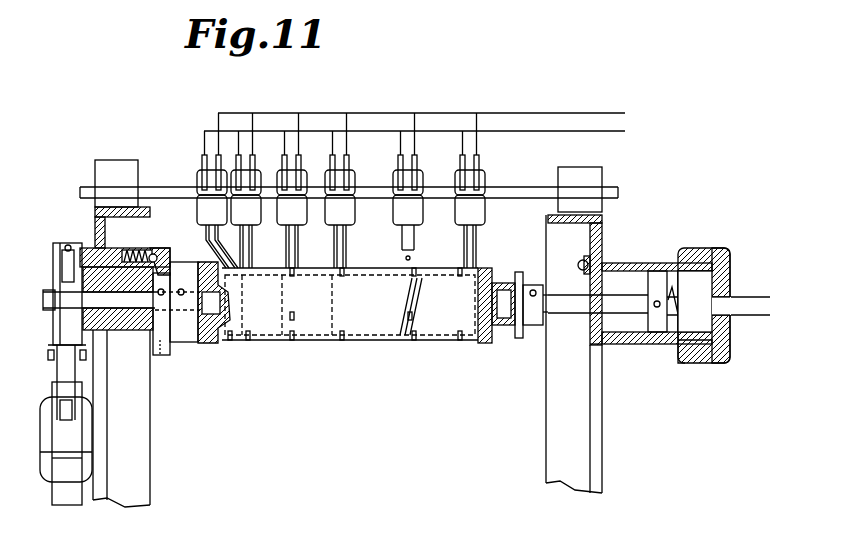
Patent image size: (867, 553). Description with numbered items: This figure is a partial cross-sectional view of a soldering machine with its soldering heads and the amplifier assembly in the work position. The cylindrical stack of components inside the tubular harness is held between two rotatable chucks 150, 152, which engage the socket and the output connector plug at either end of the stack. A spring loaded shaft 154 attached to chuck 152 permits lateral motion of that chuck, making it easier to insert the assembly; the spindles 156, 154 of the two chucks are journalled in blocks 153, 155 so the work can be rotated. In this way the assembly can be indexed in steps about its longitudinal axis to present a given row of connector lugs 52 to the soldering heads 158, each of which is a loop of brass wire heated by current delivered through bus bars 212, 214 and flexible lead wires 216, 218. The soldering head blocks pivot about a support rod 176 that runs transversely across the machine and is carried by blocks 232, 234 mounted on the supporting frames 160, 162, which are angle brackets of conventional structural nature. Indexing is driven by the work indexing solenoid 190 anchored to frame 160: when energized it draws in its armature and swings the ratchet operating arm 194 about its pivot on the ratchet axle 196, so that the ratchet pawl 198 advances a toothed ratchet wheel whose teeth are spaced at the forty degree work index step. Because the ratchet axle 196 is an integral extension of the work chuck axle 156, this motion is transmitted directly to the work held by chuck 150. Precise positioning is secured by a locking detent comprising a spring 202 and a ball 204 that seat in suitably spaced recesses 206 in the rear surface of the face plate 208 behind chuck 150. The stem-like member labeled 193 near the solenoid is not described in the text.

The connector lugs 52 is at (348, 342).
The rotatable chuck 150 is at (190, 342).
The rotatable chuck 152 is at (535, 325).
The block 153 is at (136, 330).
The spring loaded shaft 154 is at (612, 286).
The block 155 is at (618, 342).
The spindle 156 is at (80, 250).
The soldering heads 158 is at (343, 268).
The frame 160 is at (125, 207).
The frame 162 is at (604, 220).
The support rod 176 is at (507, 200).
The work indexing solenoid 190 is at (72, 480).
The stem 193 is at (60, 347).
The ratchet operating arm 194 is at (65, 307).
The ratchet axle 196 is at (67, 286).
The ratchet pawl 198 is at (66, 257).
The spring 202 is at (134, 252).
The ball 204 is at (156, 256).
The recesses 206 is at (157, 352).
The face plate 208 is at (163, 340).
The bus bar 212 is at (528, 113).
The bus bar 214 is at (577, 131).
The flexible lead wire 216 is at (404, 155).
The flexible lead wire 218 is at (476, 155).
The block 232 is at (107, 168).
The block 234 is at (585, 172).